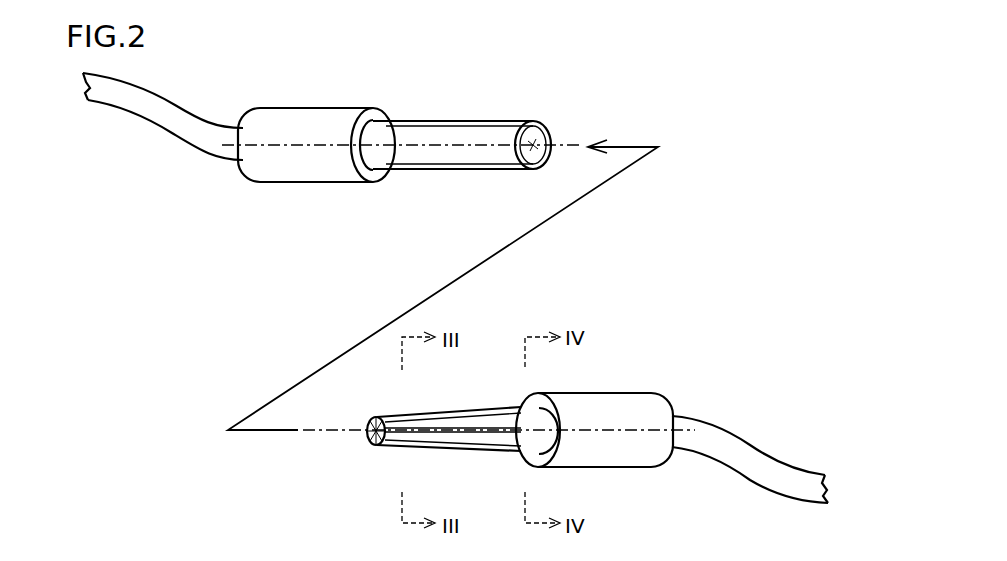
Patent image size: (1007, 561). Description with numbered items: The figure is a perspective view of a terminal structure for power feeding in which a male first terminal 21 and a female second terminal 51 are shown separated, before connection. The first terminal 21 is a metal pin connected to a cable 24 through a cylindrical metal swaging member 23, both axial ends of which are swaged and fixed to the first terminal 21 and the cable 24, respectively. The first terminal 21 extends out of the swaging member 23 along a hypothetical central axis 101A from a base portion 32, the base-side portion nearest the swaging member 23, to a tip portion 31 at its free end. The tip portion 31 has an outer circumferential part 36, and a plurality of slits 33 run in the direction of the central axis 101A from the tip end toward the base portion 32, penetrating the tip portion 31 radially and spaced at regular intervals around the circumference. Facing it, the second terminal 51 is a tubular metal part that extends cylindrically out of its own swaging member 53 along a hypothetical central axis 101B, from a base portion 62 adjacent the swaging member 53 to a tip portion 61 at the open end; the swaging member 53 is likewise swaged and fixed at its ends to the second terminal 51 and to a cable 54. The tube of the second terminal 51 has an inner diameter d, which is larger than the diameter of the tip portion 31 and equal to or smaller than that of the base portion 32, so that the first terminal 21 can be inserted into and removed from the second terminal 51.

The central axis 101A is at (578, 422).
The central axis 101B is at (378, 140).
The first terminal 21 is at (485, 406).
The swaging member 23 is at (617, 408).
The cable 24 is at (735, 445).
The tip portion 31 is at (402, 437).
The base portion 32 is at (528, 443).
The slits 33 is at (457, 442).
The outer circumferential part 36 is at (445, 412).
The second terminal 51 is at (452, 119).
The swaging member 53 is at (307, 168).
The cable 54 is at (178, 132).
The tip portion 61 is at (552, 112).
The base portion 62 is at (385, 162).
The inner diameter d is at (513, 177).